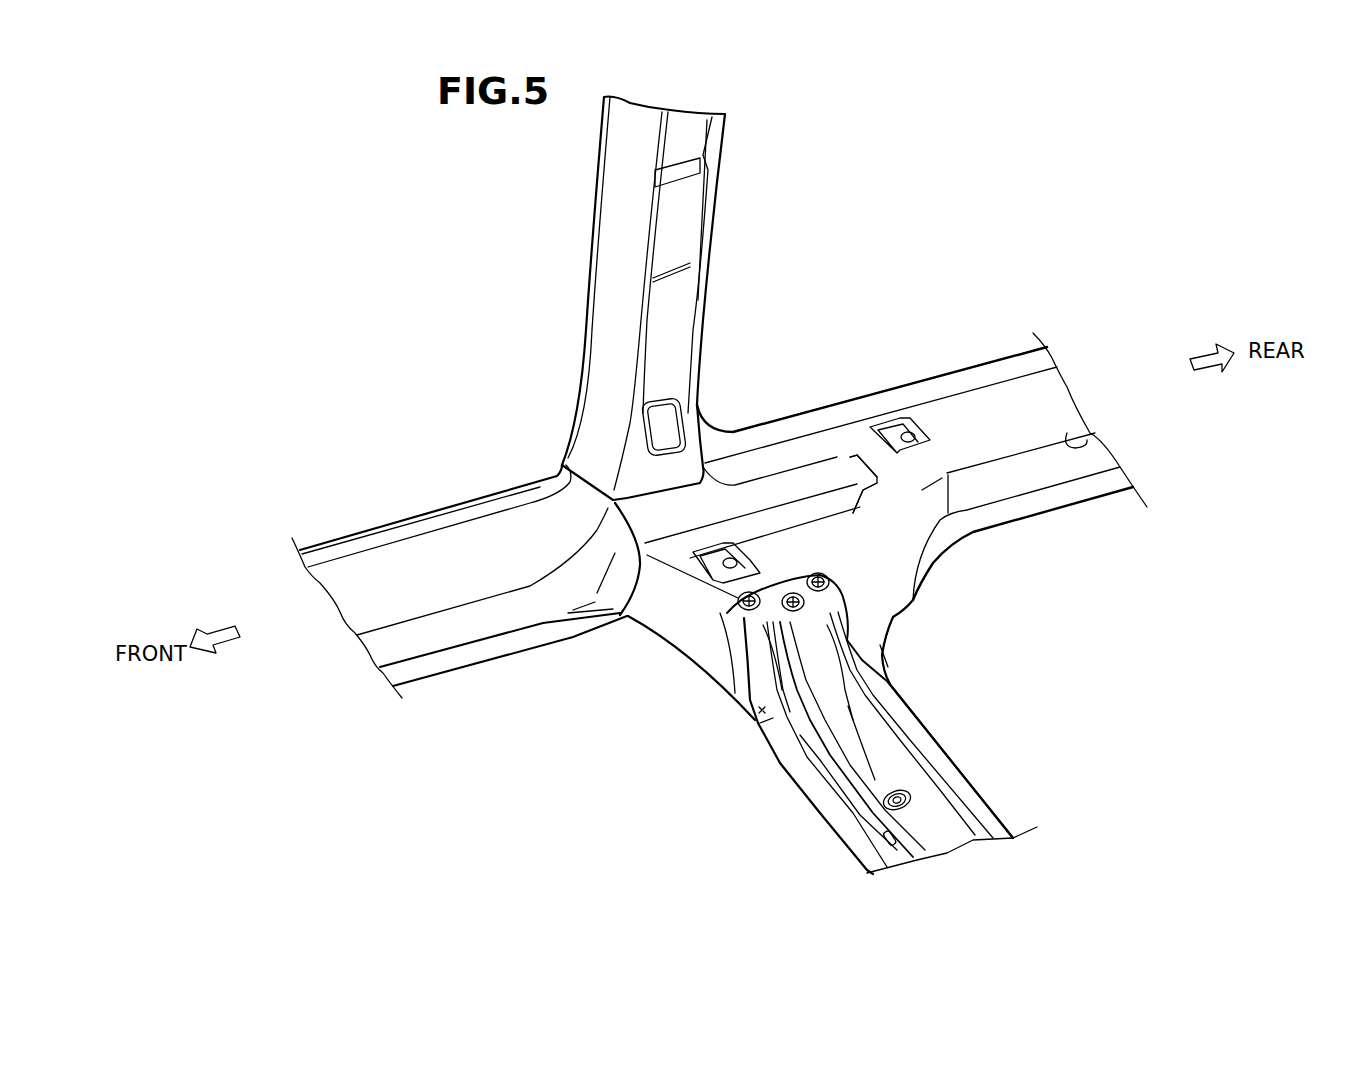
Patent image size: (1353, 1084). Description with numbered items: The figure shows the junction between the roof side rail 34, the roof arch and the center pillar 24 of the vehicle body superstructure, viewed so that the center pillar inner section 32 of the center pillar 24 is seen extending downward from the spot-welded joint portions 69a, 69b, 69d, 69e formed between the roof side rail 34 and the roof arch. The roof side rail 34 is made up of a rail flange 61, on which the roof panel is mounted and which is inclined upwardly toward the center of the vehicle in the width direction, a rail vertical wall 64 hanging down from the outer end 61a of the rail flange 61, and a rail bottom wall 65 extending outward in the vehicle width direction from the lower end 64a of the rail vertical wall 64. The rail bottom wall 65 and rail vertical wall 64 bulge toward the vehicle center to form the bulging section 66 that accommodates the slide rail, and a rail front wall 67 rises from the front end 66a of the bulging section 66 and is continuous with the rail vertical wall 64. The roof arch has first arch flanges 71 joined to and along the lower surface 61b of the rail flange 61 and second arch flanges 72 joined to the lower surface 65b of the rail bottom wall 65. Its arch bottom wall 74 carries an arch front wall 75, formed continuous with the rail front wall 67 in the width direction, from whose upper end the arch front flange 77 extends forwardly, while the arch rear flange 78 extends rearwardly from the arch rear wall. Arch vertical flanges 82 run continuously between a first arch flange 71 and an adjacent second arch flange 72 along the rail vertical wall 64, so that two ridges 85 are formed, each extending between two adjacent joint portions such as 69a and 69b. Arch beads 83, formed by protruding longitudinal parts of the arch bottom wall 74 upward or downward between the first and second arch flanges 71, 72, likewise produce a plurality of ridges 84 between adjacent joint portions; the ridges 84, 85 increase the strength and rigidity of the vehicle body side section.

The center pillar 24 is at (735, 197).
The center pillar inner section 32 is at (712, 288).
The roof side rail 34 is at (1018, 340).
The rail bottom wall 65 is at (967, 407).
The rail vertical wall 64 is at (1017, 480).
The lower end of the rail vertical wall 64a is at (1068, 438).
The lower surface of the rail bottom wall 65b is at (925, 541).
The joint portion 69d is at (890, 595).
The second arch flange 72 is at (748, 596).
The rail flange 61 is at (900, 615).
The outer end of the rail flange 61a is at (893, 618).
The lower surface of the rail flange 61b is at (882, 648).
The bulging section 66 is at (630, 615).
The front end of the bulging section 66a is at (677, 618).
The rail front wall 67 is at (677, 578).
The joint portion 69a is at (756, 720).
The joint portion 69b is at (727, 597).
The joint portion 69e is at (758, 690).
The first arch flange 71 is at (750, 715).
The arch vertical flange 82 is at (767, 720).
The arch bead 83 is at (932, 773).
The ridge 84 is at (848, 620).
The ridge 85 is at (770, 663).
The arch rear flange 78 is at (973, 800).
The arch front wall 75 is at (822, 808).
The arch front flange 77 is at (851, 842).
The arch bottom wall 74 is at (918, 826).